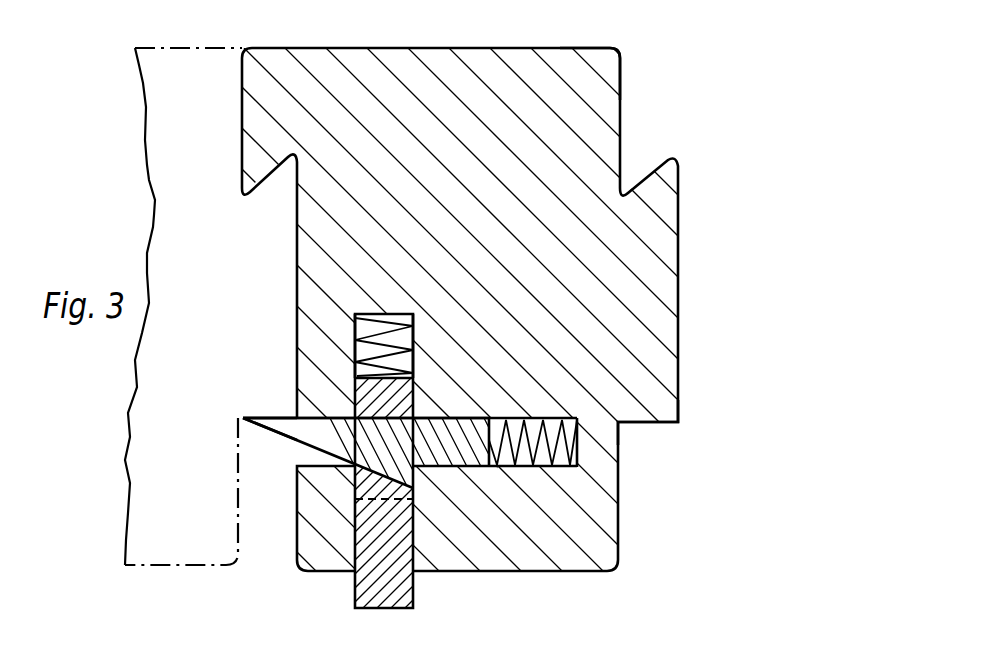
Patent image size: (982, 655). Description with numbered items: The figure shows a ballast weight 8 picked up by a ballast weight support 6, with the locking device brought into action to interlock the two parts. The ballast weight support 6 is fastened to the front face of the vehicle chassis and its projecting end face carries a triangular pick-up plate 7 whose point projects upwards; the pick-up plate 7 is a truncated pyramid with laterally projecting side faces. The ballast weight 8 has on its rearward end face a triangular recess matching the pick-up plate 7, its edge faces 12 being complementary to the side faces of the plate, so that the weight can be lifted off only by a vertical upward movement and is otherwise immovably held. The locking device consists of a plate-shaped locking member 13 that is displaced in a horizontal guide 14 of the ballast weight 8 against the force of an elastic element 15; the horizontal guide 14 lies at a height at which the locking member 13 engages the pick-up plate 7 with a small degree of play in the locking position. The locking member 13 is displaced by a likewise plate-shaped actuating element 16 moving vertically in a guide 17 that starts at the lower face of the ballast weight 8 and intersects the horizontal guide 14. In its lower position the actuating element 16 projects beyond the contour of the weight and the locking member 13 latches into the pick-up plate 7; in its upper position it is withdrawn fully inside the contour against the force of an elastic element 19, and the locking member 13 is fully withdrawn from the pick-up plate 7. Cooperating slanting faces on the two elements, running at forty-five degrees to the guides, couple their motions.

The ballast weight support 6 is at (172, 122).
The pick-up plate 7 is at (662, 205).
The ballast weight 8 is at (604, 62).
The edge faces 12 is at (667, 425).
The locking member 13 is at (303, 441).
The horizontal guide 14 is at (533, 469).
The elastic element 15 is at (577, 458).
The actuating element 16 is at (413, 605).
The guide 17 is at (353, 357).
The elastic element 19 is at (355, 322).